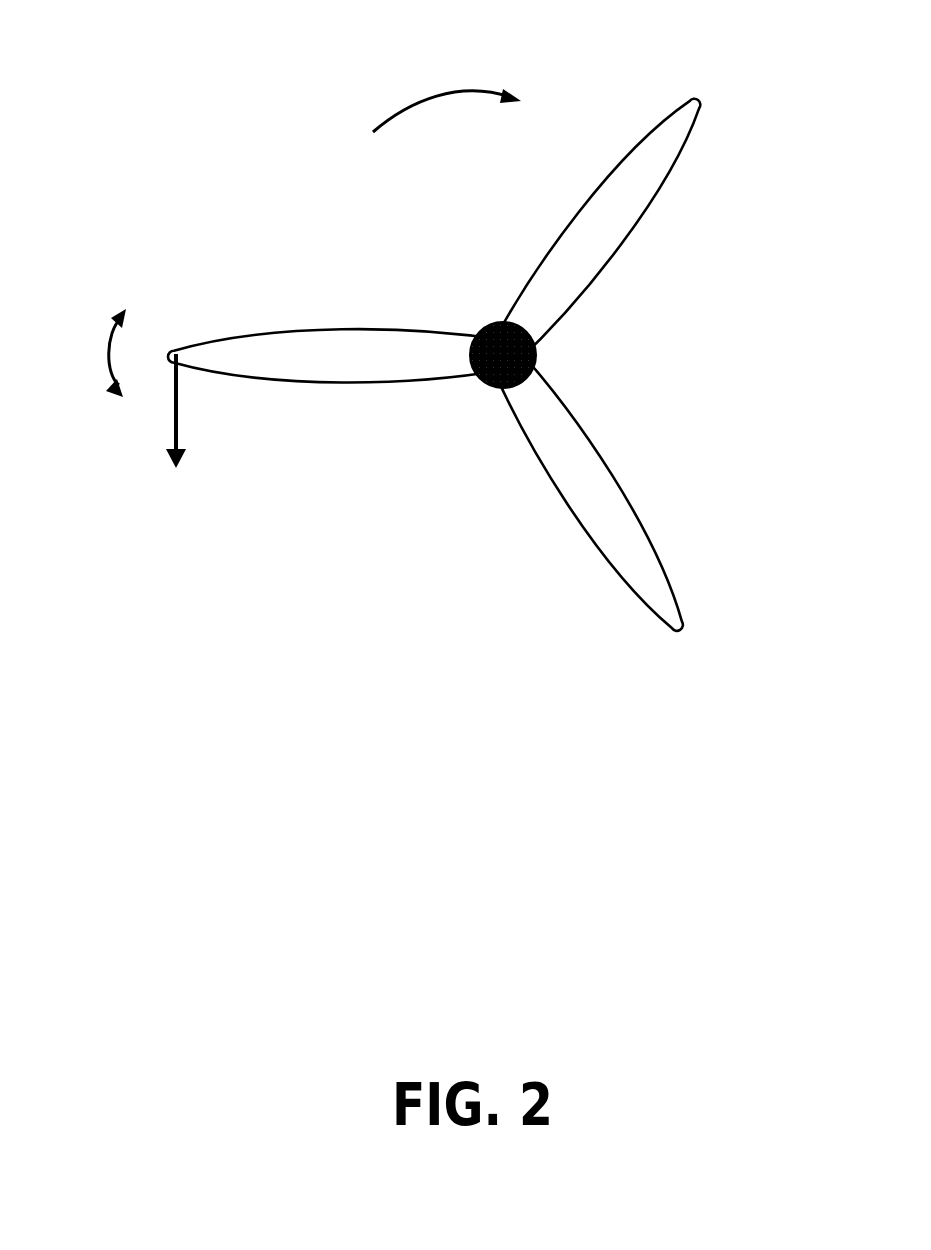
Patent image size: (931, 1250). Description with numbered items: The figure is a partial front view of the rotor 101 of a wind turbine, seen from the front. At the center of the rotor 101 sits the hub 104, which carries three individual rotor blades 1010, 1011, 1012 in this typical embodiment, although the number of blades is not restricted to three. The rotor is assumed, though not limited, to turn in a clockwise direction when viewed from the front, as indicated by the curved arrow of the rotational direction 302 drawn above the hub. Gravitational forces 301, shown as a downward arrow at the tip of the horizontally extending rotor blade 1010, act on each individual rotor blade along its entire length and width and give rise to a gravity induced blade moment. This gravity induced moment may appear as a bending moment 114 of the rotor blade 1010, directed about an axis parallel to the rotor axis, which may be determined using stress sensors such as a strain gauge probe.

The rotor 101 is at (170, 120).
The hub 104 is at (493, 323).
The rotor blade 1010 is at (330, 324).
The rotor blade 1011 is at (603, 560).
The rotor blade 1012 is at (686, 172).
The gravitational forces 301 is at (178, 405).
The rotational direction 302 is at (432, 90).
The bending moment 114 is at (108, 337).